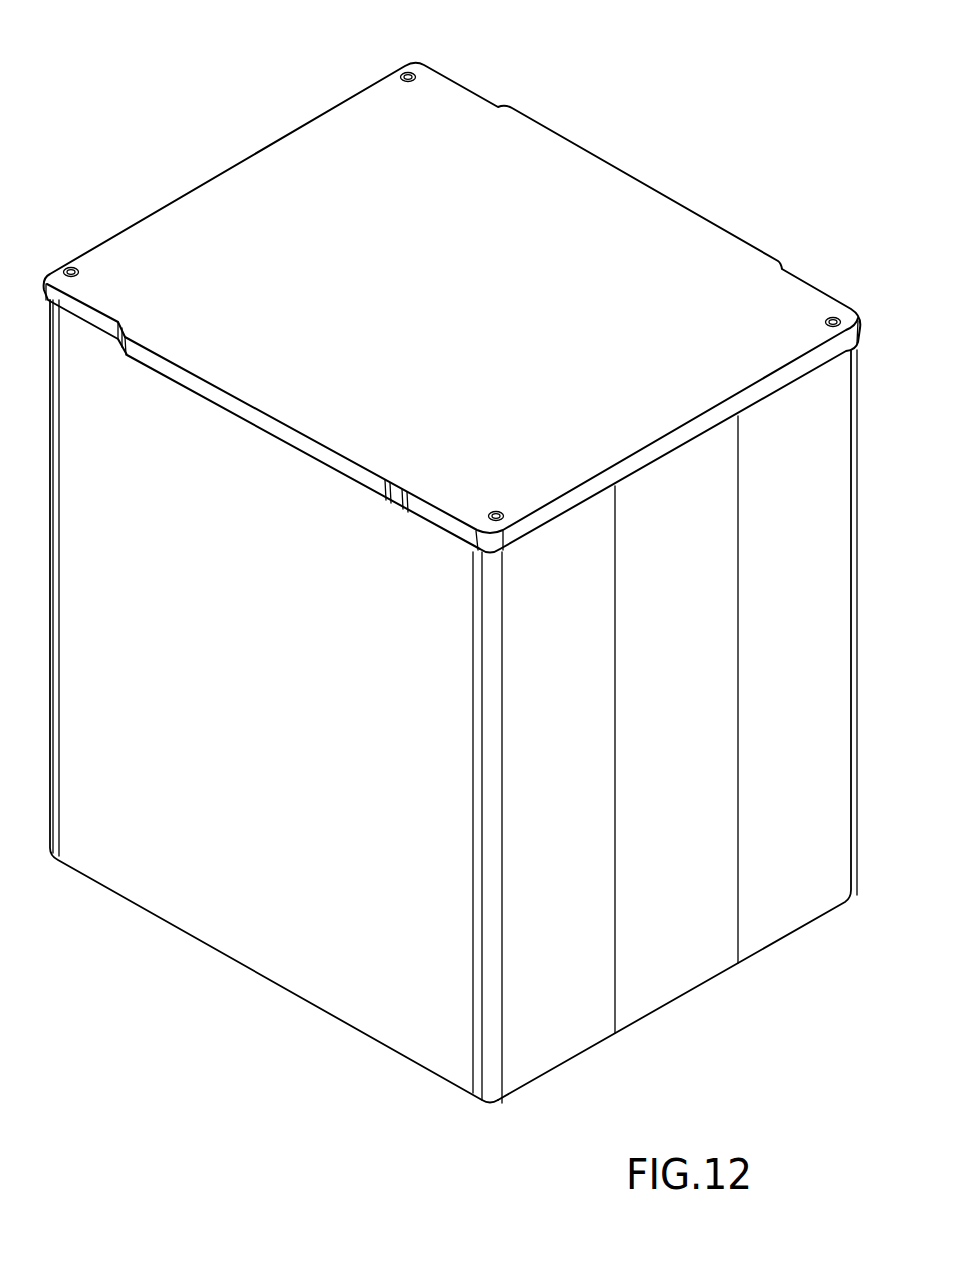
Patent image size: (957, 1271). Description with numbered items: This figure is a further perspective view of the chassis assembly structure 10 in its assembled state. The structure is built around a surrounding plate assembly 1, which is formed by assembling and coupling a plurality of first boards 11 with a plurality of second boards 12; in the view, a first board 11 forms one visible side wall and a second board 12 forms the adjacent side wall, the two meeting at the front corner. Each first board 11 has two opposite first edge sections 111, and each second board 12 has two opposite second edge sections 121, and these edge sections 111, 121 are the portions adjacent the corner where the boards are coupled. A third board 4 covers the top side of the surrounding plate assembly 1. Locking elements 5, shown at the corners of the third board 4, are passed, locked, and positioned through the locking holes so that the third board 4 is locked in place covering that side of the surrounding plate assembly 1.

The chassis assembly structure 10 is at (700, 57).
The third board 4 is at (242, 168).
The locking element 5 is at (73, 265).
The surrounding plate assembly 1 is at (398, 1122).
The first board 11 is at (430, 1050).
The first edge section 111 is at (470, 982).
The second board 12 is at (550, 1050).
The second edge section 121 is at (505, 1000).